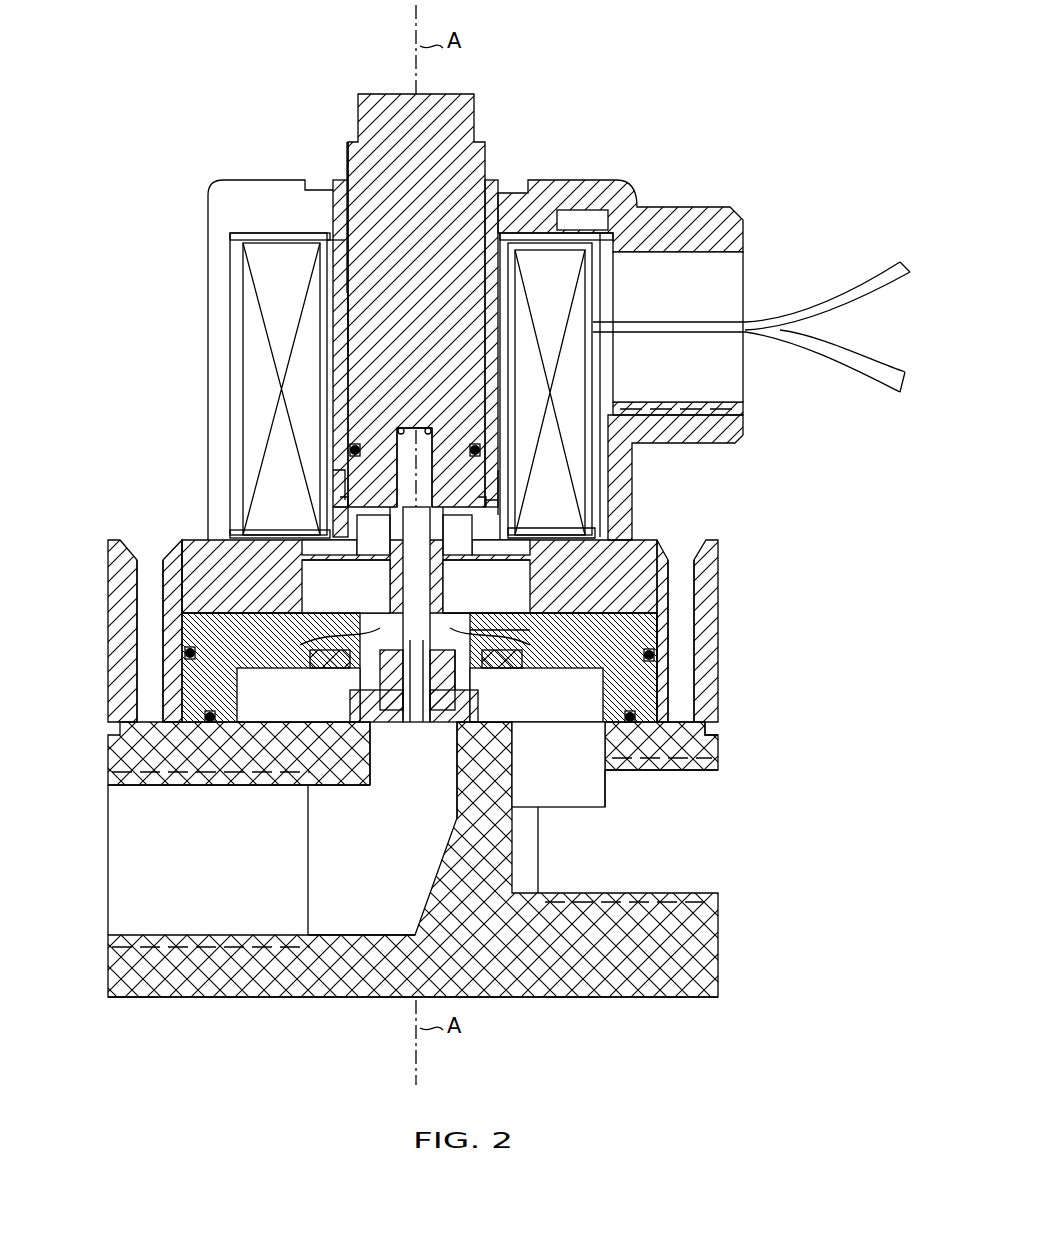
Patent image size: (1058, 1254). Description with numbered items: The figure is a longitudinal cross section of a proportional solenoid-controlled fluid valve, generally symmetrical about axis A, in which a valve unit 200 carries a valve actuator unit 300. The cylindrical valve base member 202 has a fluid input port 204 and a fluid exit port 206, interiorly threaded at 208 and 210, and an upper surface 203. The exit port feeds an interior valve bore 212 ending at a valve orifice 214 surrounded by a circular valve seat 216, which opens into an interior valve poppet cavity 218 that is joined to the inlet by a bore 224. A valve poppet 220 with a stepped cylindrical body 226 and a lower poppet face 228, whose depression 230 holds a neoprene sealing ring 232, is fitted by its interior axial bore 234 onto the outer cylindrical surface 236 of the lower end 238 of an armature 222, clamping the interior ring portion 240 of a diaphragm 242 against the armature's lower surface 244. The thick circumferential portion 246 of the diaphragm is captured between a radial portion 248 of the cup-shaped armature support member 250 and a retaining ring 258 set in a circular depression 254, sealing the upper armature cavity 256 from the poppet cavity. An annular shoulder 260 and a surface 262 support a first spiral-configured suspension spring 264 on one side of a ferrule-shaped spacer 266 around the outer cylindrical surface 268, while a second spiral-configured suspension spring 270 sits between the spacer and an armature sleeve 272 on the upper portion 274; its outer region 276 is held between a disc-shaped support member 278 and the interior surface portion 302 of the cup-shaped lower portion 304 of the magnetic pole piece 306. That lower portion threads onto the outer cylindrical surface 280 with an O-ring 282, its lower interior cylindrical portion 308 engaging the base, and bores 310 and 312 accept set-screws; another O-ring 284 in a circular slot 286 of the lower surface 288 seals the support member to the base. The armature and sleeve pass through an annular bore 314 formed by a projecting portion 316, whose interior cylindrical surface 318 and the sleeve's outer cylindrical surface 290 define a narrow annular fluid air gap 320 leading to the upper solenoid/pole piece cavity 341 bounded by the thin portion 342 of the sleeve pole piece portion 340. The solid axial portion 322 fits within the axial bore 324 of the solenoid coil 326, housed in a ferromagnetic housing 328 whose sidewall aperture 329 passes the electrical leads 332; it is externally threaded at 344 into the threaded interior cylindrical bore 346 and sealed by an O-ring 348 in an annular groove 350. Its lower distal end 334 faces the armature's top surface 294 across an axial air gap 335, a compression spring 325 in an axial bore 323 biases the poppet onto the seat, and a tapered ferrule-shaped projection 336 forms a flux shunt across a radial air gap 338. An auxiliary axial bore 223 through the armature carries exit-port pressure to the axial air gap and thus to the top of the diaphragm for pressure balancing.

The valve unit 200 is at (643, 1008).
The valve base member 202 is at (707, 945).
The upper surface 203 is at (683, 722).
The fluid input port 204 is at (707, 868).
The fluid exit port 206 is at (132, 898).
The interior threading of fluid input port 208 is at (662, 762).
The interior threading of fluid exit port 210 is at (130, 787).
The interior valve bore 212 is at (445, 835).
The valve orifice 214 is at (440, 740).
The valve seat 216 is at (505, 713).
The interior valve poppet cavity 218 is at (265, 717).
The valve poppet 220 is at (560, 628).
The armature 222 is at (435, 617).
The auxiliary axial bore 223 is at (435, 600).
The bore 224 is at (560, 800).
The stepped cylindrical body 226 is at (472, 668).
The poppet face 228 is at (400, 733).
The depression 230 is at (355, 707).
The sealing ring 232 is at (435, 712).
The interior axial bore 234 is at (445, 713).
The outer cylindrical surface 236 is at (392, 730).
The lower end 238 is at (370, 674).
The interior ring portion 240 is at (375, 668).
The diaphragm 242 is at (393, 612).
The lower surface 244 is at (442, 670).
The circumferential portion 246 is at (200, 625).
The radial portion 248 is at (535, 642).
The armature support member 250 is at (193, 682).
The circular depression 254 is at (505, 662).
The upper armature cavity 256 is at (200, 605).
The retaining ring 258 is at (300, 665).
The annular shoulder 260 is at (395, 597).
The surface 262 is at (190, 655).
The first spiral-configured suspension spring 264 is at (530, 627).
The spacer 266 is at (545, 580).
The outer cylindrical surface 268 is at (377, 573).
The second spiral-configured suspension spring 270 is at (218, 560).
The armature sleeve 272 is at (490, 508).
The upper portion 274 is at (330, 372).
The outer region 276 is at (492, 518).
The support member 278 is at (648, 568).
The outer cylindrical surface 280 is at (655, 645).
The O-ring 282 is at (660, 655).
The O-ring 284 is at (630, 716).
The circular slot 286 is at (628, 716).
The lower surface 288 is at (225, 735).
The outer cylindrical surface 290 is at (376, 560).
The top surface 294 is at (455, 515).
The valve actuator unit 300 is at (622, 178).
The interior surface portion 302 is at (643, 562).
The lower portion 304 is at (712, 552).
The magnetic pole piece 306 is at (488, 190).
The lower interior cylindrical portion 308 is at (713, 727).
The bore 310 is at (683, 567).
The bore 312 is at (148, 566).
The annular bore 314 is at (243, 562).
The projecting portion 316 is at (325, 530).
The interior cylindrical surface 318 is at (373, 535).
The annular fluid air gap 320 is at (457, 560).
The axial portion 322 is at (462, 112).
The axial bore 323 is at (370, 350).
The axial bore 324 is at (332, 237).
The compression spring 325 is at (362, 302).
The solenoid coil 326 is at (250, 340).
The housing 328 is at (690, 208).
The sidewall aperture 329 is at (737, 263).
The electrical leads 332 is at (788, 313).
The lower distal end 334 is at (470, 530).
The axial air gap 335 is at (453, 512).
The ferrule-shaped projection 336 is at (487, 517).
The radial air gap 338 is at (345, 497).
The sleeve pole piece portion 340 is at (338, 181).
The upper solenoid/pole piece cavity 341 is at (340, 507).
The thin portion 342 is at (345, 490).
The external threads 344 is at (325, 248).
The threaded interior cylindrical bore 346 is at (348, 172).
The O-ring 348 is at (485, 425).
The annular groove 350 is at (490, 372).